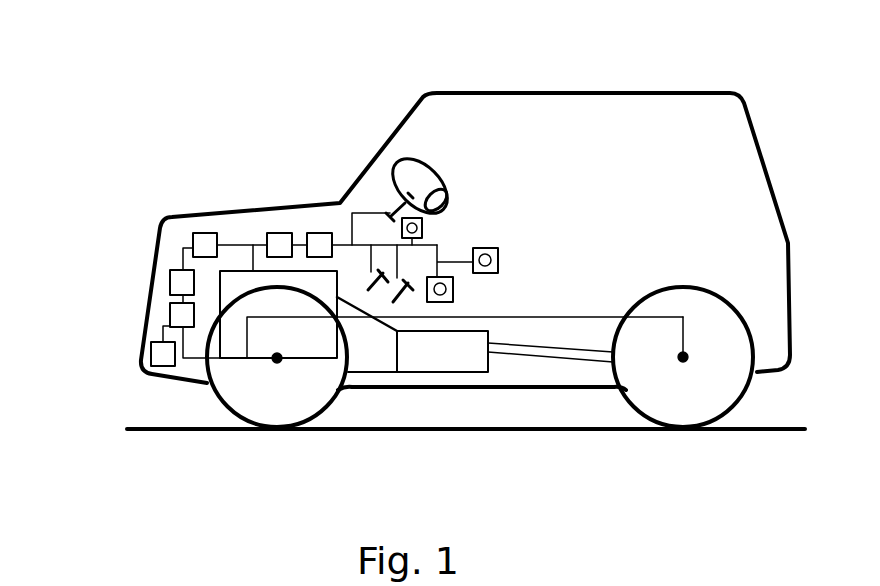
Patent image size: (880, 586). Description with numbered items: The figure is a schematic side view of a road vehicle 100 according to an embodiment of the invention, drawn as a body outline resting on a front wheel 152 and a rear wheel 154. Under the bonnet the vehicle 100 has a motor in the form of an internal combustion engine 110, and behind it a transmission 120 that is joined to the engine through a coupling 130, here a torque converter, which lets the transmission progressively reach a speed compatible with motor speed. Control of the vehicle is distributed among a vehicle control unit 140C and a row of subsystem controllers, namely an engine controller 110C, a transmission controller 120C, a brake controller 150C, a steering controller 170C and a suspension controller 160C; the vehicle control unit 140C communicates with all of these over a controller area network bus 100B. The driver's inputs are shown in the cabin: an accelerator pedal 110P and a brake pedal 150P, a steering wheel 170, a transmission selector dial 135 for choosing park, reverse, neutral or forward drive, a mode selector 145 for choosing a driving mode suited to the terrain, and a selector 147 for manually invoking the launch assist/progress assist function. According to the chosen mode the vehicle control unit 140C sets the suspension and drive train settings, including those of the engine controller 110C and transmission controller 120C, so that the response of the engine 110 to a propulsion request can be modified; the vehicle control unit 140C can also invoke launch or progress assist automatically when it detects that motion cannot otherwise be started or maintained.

The vehicle 100 is at (345, 147).
The controller area network (CAN) bus 100B is at (180, 257).
The internal combustion engine 110 is at (240, 283).
The engine controller 110C is at (270, 233).
The accelerator pedal 110P is at (378, 282).
The transmission 120 is at (473, 362).
The transmission controller 120C is at (170, 282).
The coupling 130 is at (363, 362).
The transmission selector dial 135 is at (498, 248).
The vehicle control unit (VCU) 140C is at (193, 240).
The mode selector 145 is at (453, 288).
The selector 147 is at (422, 228).
The brake controller 150C is at (170, 315).
The brake pedal 150P is at (403, 287).
The front wheel 152 is at (272, 363).
The rear wheel 154 is at (687, 362).
The suspension controller 160C is at (150, 355).
The steering wheel 170 is at (413, 160).
The steering controller 170C is at (315, 233).